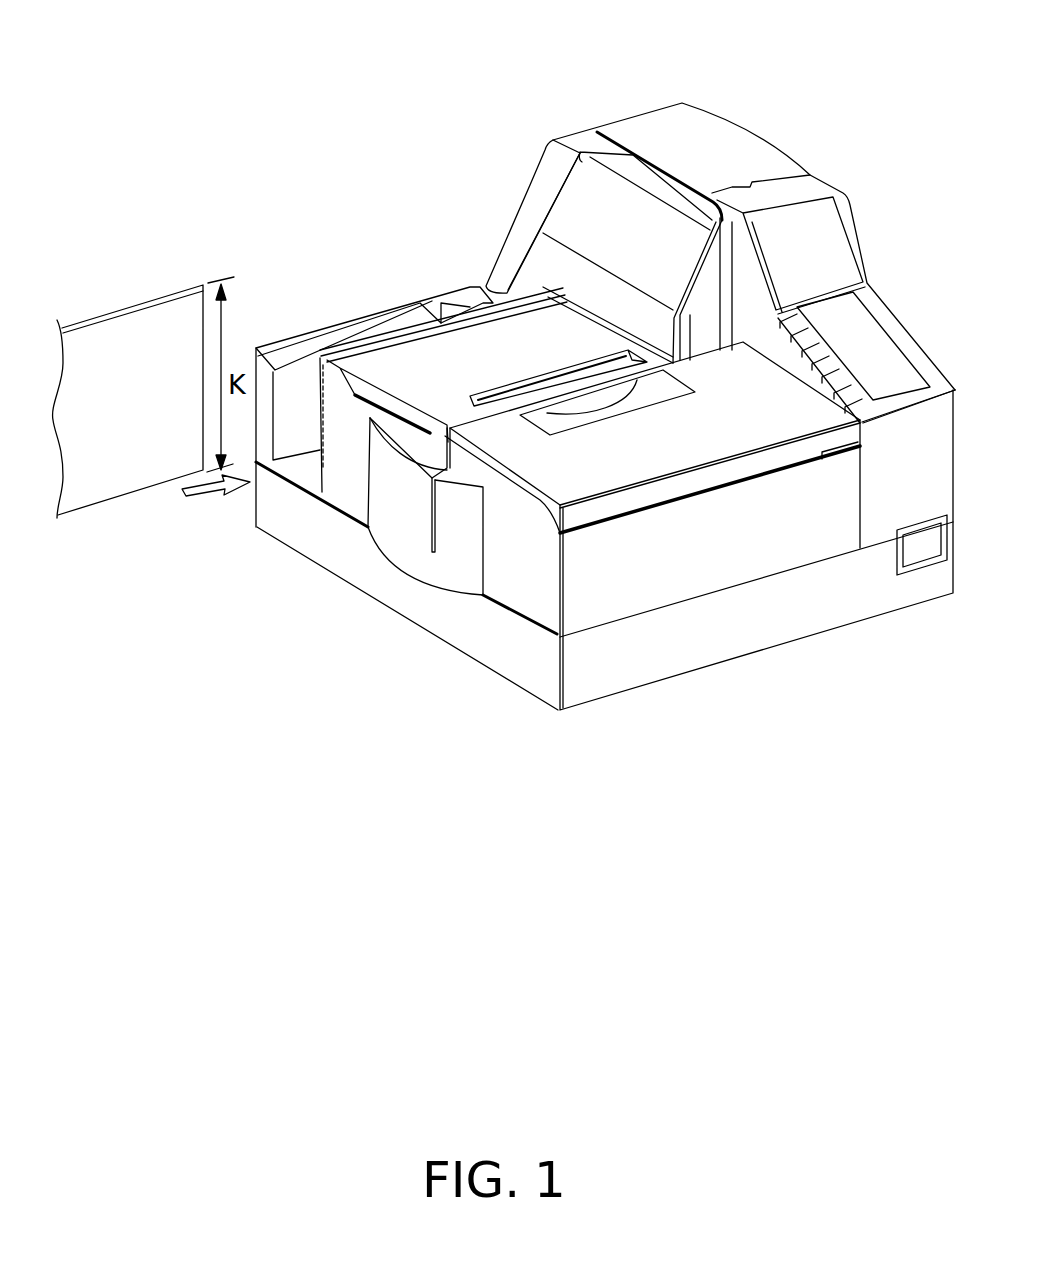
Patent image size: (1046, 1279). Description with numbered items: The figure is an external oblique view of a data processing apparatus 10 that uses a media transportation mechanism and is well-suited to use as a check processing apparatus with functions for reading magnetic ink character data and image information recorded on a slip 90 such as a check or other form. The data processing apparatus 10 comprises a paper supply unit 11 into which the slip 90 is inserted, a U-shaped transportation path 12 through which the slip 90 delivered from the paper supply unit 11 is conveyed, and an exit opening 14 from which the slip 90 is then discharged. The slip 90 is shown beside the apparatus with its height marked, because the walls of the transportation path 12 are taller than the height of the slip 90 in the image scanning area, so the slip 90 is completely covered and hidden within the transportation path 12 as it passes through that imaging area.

The data processing apparatus 10 is at (605, 369).
The paper supply unit 11 is at (370, 347).
The U-shaped transportation path 12 is at (492, 288).
The exit opening 14 is at (433, 463).
The slip 90 is at (125, 480).